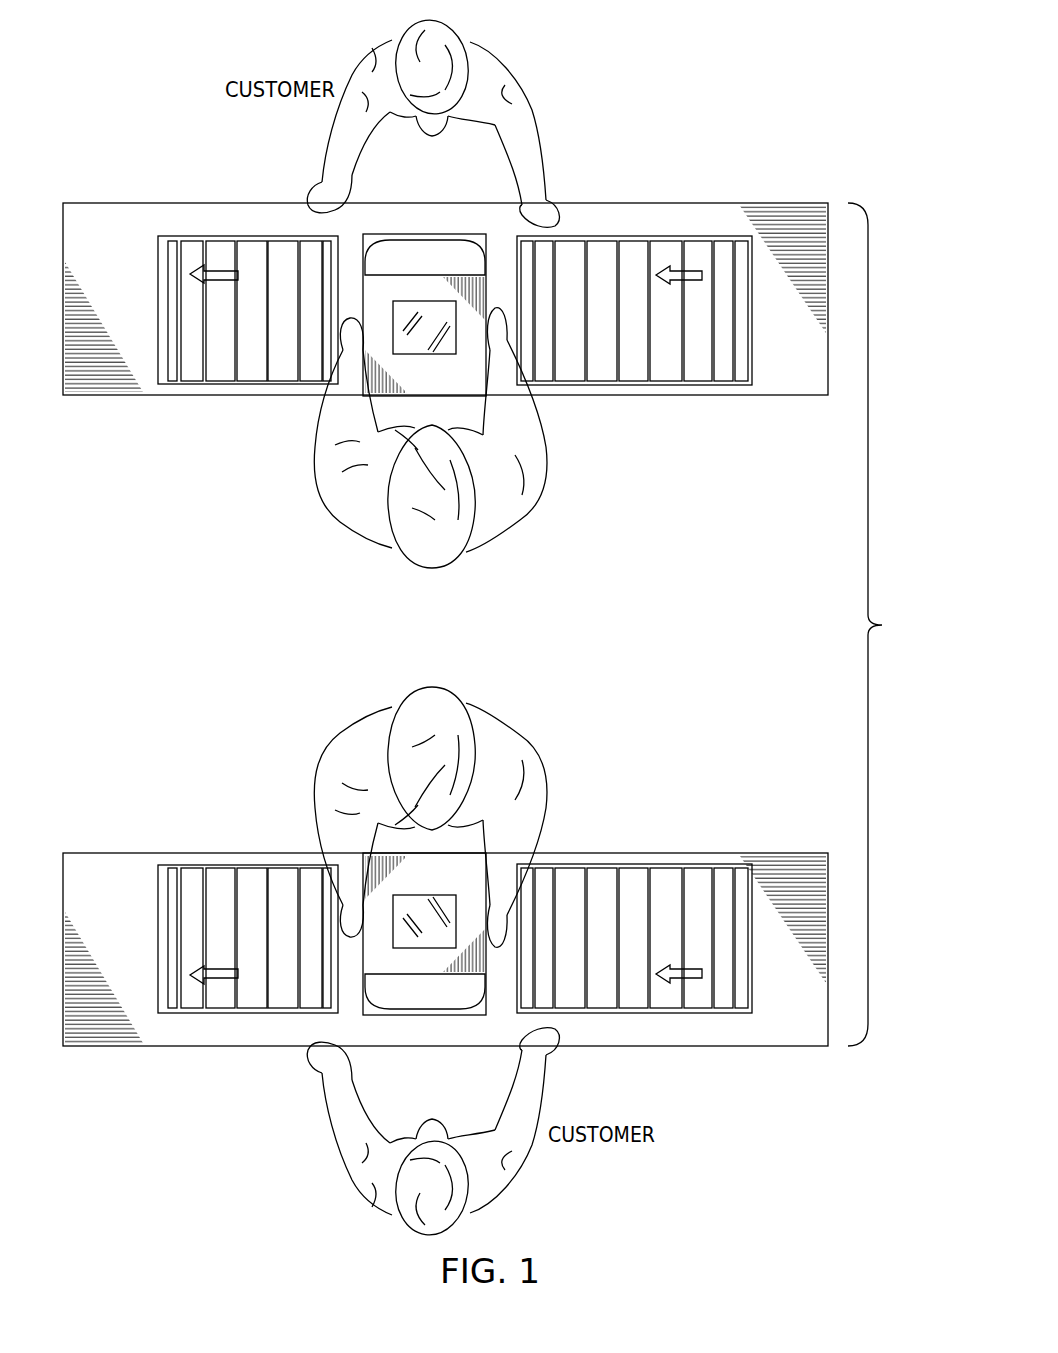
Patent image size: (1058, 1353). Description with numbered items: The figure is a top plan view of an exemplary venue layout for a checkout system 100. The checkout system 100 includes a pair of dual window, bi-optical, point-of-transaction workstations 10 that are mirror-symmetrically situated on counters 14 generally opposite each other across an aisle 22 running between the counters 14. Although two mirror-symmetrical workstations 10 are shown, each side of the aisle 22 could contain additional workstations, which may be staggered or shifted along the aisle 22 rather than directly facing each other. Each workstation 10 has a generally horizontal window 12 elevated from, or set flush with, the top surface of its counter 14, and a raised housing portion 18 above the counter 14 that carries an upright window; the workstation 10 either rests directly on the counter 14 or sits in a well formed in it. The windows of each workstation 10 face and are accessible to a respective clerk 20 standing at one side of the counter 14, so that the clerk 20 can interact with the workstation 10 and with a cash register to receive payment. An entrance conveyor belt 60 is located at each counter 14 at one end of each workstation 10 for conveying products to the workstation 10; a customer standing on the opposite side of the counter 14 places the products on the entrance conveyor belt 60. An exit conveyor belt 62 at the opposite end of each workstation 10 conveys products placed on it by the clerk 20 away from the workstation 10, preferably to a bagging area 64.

The checkout system 100 is at (886, 624).
The counter 14 is at (797, 864).
The bagging area 64 is at (86, 378).
The exit conveyor belt 62 is at (217, 374).
The entrance conveyor belt 60 is at (635, 900).
The point-of-transaction workstation 10 is at (470, 380).
The raised housing portion 18 is at (424, 250).
The horizontal window 12 is at (434, 355).
The clerk 20 is at (505, 512).
The aisle 22 is at (705, 628).